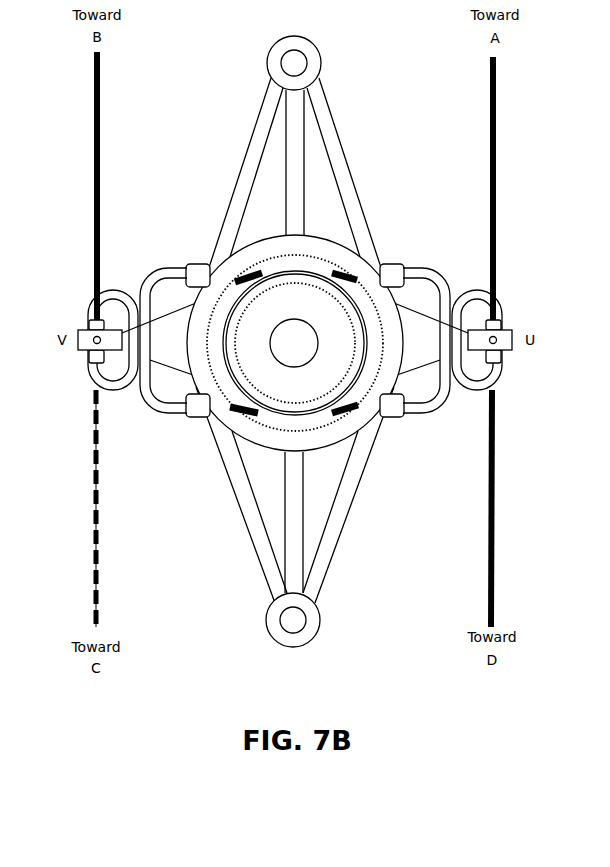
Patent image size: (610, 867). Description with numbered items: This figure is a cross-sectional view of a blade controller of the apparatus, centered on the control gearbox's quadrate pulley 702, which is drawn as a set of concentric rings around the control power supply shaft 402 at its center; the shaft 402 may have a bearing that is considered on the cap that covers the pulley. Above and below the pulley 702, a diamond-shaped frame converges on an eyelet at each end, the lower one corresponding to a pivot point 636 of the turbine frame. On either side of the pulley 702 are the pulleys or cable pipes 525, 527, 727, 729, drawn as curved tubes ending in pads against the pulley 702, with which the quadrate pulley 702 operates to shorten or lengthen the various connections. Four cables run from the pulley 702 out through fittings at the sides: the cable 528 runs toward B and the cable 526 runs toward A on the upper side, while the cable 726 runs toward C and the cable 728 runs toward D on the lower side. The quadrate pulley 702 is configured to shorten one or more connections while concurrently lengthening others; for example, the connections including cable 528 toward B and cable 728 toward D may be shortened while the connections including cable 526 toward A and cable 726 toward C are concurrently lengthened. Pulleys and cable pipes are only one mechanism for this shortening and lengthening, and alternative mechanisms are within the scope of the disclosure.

The control power supply shaft 402 is at (283, 351).
The pivot point 636 is at (308, 628).
The quadrate pulley 702 is at (246, 311).
The cable pipe 525 is at (443, 269).
The cable pipe 527 is at (157, 269).
The cable 526 is at (499, 171).
The cable 528 is at (93, 183).
The cable 726 is at (89, 529).
The cable 728 is at (499, 504).
The cable pipe 727 is at (165, 416).
The cable pipe 729 is at (426, 415).